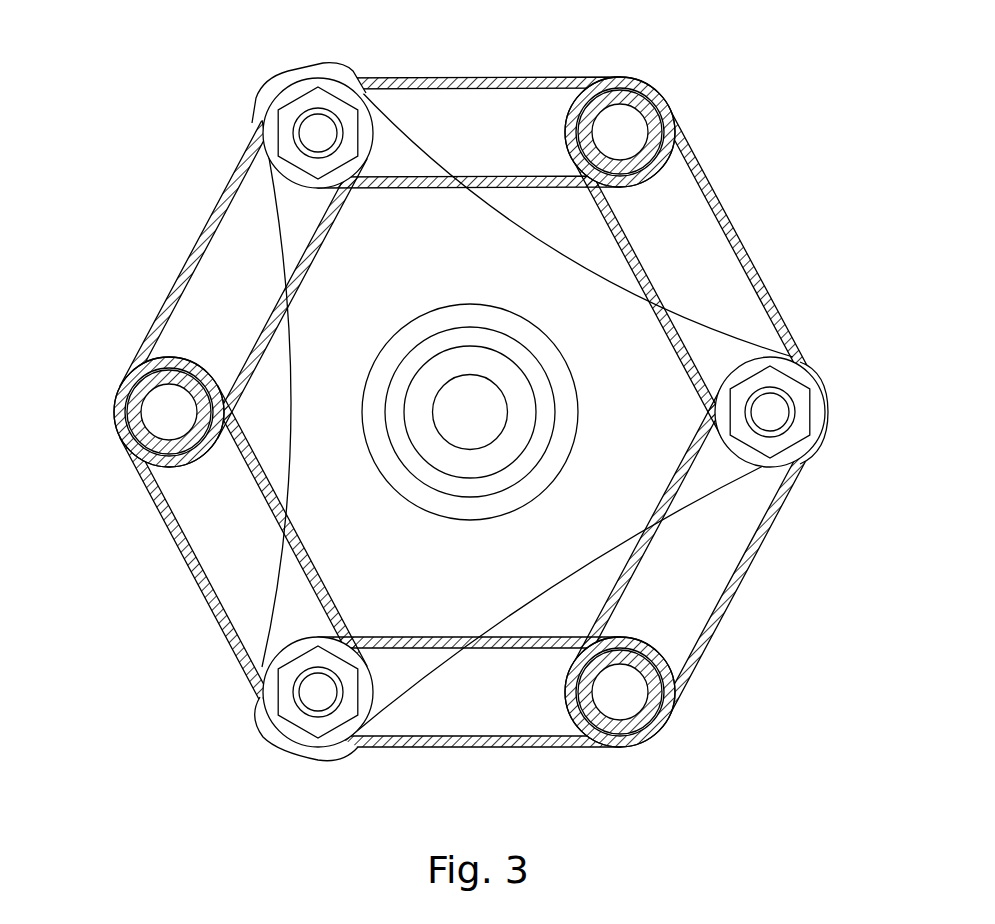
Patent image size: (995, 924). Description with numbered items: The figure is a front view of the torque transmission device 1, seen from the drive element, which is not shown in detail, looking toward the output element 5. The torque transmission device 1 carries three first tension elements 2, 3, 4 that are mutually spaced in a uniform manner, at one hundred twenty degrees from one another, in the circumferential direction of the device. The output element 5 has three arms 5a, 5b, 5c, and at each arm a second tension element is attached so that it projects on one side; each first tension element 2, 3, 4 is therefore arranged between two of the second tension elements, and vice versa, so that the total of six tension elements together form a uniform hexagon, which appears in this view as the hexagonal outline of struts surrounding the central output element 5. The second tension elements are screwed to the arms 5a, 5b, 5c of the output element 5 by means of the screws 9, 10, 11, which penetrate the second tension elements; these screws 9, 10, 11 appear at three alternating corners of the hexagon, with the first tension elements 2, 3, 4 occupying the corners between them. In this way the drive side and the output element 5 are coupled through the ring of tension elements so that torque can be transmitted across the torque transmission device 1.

The torque transmission device 1 is at (797, 160).
The first tension element 2 is at (630, 115).
The first tension element 3 is at (632, 722).
The first tension element 4 is at (142, 400).
The output element 5 is at (543, 545).
The arm 5a is at (397, 142).
The arm 5b is at (720, 477).
The arm 5c is at (392, 683).
The screw 9 is at (323, 108).
The screw 10 is at (787, 408).
The screw 11 is at (317, 723).